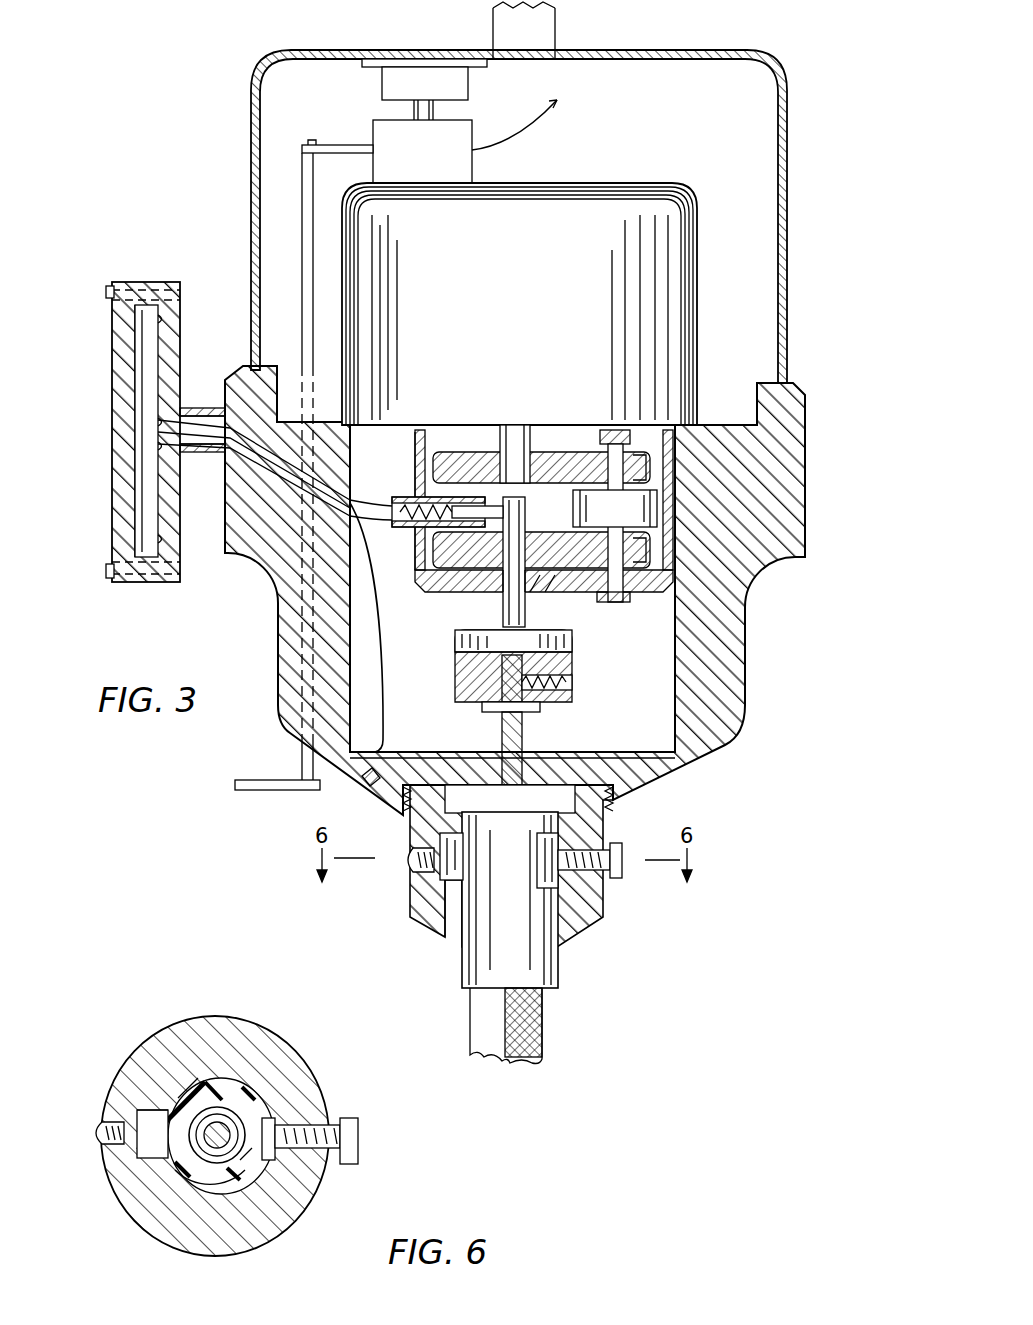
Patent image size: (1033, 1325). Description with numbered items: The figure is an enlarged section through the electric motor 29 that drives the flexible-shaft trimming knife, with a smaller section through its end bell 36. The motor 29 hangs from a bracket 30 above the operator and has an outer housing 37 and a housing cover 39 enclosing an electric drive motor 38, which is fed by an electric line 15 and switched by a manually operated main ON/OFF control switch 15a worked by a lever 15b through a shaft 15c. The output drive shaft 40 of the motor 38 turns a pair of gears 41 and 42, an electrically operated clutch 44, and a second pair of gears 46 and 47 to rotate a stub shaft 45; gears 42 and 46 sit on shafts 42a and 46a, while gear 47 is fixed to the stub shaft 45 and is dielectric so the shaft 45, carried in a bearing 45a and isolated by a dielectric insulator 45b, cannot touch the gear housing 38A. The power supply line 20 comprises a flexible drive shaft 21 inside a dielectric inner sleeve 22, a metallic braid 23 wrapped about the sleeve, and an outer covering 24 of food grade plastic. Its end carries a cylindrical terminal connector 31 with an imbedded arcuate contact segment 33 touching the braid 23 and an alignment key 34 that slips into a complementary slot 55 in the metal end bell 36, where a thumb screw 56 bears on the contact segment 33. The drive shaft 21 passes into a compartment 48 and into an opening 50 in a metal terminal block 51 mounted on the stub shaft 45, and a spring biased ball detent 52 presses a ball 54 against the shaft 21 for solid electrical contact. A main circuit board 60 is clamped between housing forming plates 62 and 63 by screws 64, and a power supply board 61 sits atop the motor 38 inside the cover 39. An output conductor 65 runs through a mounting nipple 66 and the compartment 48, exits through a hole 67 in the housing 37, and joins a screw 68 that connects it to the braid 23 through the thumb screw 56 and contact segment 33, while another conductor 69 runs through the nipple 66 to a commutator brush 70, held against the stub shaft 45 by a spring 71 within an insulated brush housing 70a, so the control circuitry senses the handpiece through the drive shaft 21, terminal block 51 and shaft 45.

In FIG. 3, the electric line 15 is at (530, 128).
In FIG. 3, the main ON/OFF control switch 15a is at (422, 151).
In FIG. 3, the lever 15b is at (283, 793).
In FIG. 3, the shaft 15c is at (318, 262).
In FIG. 3, the power supply line 20 is at (544, 1037).
In FIG. 3, the flexible drive shaft 21 is at (524, 775).
In FIG. 6, the flexible drive shaft 21 is at (236, 1136).
In FIG. 6, the inner sleeve 22 is at (185, 1190).
In FIG. 6, the metallic braid 23 is at (225, 1105).
In FIG. 6, the outer covering 24 is at (232, 1112).
In FIG. 3, the electric motor 29 is at (738, 297).
In FIG. 3, the bracket 30 is at (542, 14).
In FIG. 3, the terminal connector 31 is at (528, 958).
In FIG. 6, the terminal connector 31 is at (190, 1170).
In FIG. 3, the arcuate contact segment 33 is at (545, 870).
In FIG. 6, the arcuate contact segment 33 is at (258, 1165).
In FIG. 3, the alignment key 34 is at (455, 858).
In FIG. 6, the alignment key 34 is at (150, 1152).
In FIG. 3, the end bell 36 is at (592, 920).
In FIG. 6, the end bell 36 is at (276, 1246).
In FIG. 3, the outer housing 37 is at (745, 634).
In FIG. 3, the electric drive motor 38 is at (519, 304).
In FIG. 3, the gear housing 38A is at (420, 442).
In FIG. 3, the housing cover 39 is at (251, 164).
In FIG. 3, the output drive shaft 40 is at (514, 442).
In FIG. 3, the gear 41 is at (462, 458).
In FIG. 3, the gear 42 is at (640, 468).
In FIG. 3, the shaft 42a is at (610, 446).
In FIG. 3, the electrically operated clutch 44 is at (615, 508).
In FIG. 3, the stub shaft 45 is at (503, 616).
In FIG. 3, the bearing 45a is at (527, 592).
In FIG. 3, the dielectric insulator 45b is at (567, 592).
In FIG. 3, the gear 46 is at (640, 548).
In FIG. 3, the shaft 46a is at (614, 602).
In FIG. 3, the gear 47 is at (450, 546).
In FIG. 3, the compartment 48 is at (660, 706).
In FIG. 3, the opening 50 is at (497, 688).
In FIG. 3, the terminal block 51 is at (456, 668).
In FIG. 3, the spring biased ball detent 52 is at (573, 682).
In FIG. 3, the ball 54 is at (541, 706).
In FIG. 3, the slot 55 is at (455, 932).
In FIG. 6, the slot 55 is at (155, 1108).
In FIG. 3, the thumb screw 56 is at (620, 845).
In FIG. 6, the thumb screw 56 is at (358, 1138).
In FIG. 3, the main circuit board 60 is at (135, 476).
In FIG. 3, the power supply board 61 is at (395, 78).
In FIG. 3, the housing forming plate 62 is at (122, 374).
In FIG. 3, the housing forming plate 63 is at (172, 352).
In FIG. 3, the screws 64 is at (108, 294).
In FIG. 3, the output conductor 65 is at (385, 736).
In FIG. 6, the output conductor 65 is at (103, 1100).
In FIG. 3, the mounting nipple 66 is at (201, 452).
In FIG. 3, the hole 67 is at (365, 783).
In FIG. 3, the screw 68 is at (406, 862).
In FIG. 6, the screw 68 is at (92, 1138).
In FIG. 3, the conductor 69 is at (200, 412).
In FIG. 3, the commutator brush 70 is at (525, 511).
In FIG. 3, the brush housing 70a is at (395, 505).
In FIG. 3, the spring 71 is at (403, 500).